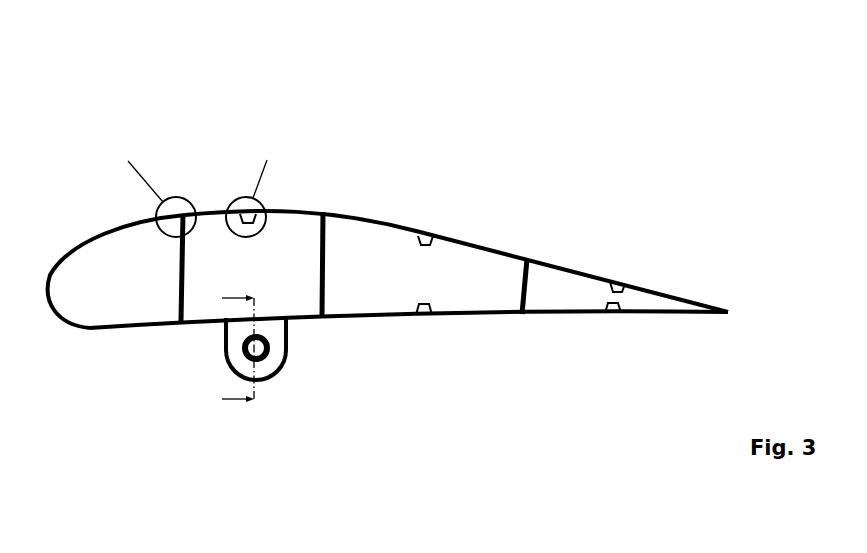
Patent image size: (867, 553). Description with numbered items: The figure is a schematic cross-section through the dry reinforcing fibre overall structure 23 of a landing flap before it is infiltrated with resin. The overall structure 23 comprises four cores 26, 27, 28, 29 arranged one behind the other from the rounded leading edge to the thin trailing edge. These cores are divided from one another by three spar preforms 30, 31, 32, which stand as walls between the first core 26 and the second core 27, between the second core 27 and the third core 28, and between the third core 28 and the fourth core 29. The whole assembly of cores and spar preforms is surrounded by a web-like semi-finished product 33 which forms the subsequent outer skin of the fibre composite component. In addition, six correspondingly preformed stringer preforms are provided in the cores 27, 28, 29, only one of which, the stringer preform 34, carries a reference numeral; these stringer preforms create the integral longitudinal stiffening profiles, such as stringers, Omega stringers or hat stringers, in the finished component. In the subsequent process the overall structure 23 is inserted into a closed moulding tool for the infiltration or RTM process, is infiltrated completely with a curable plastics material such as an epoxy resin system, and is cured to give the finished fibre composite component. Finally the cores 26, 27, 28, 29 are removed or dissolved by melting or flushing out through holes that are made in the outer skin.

The overall structure 23 is at (401, 116).
The core 26 is at (116, 271).
The core 27 is at (304, 290).
The core 28 is at (420, 290).
The core 29 is at (567, 302).
The spar preform 30 is at (180, 286).
The spar preform 31 is at (325, 278).
The spar preform 32 is at (517, 316).
The web-like semi-finished product 33 is at (467, 240).
The stringer preform 34 is at (250, 224).